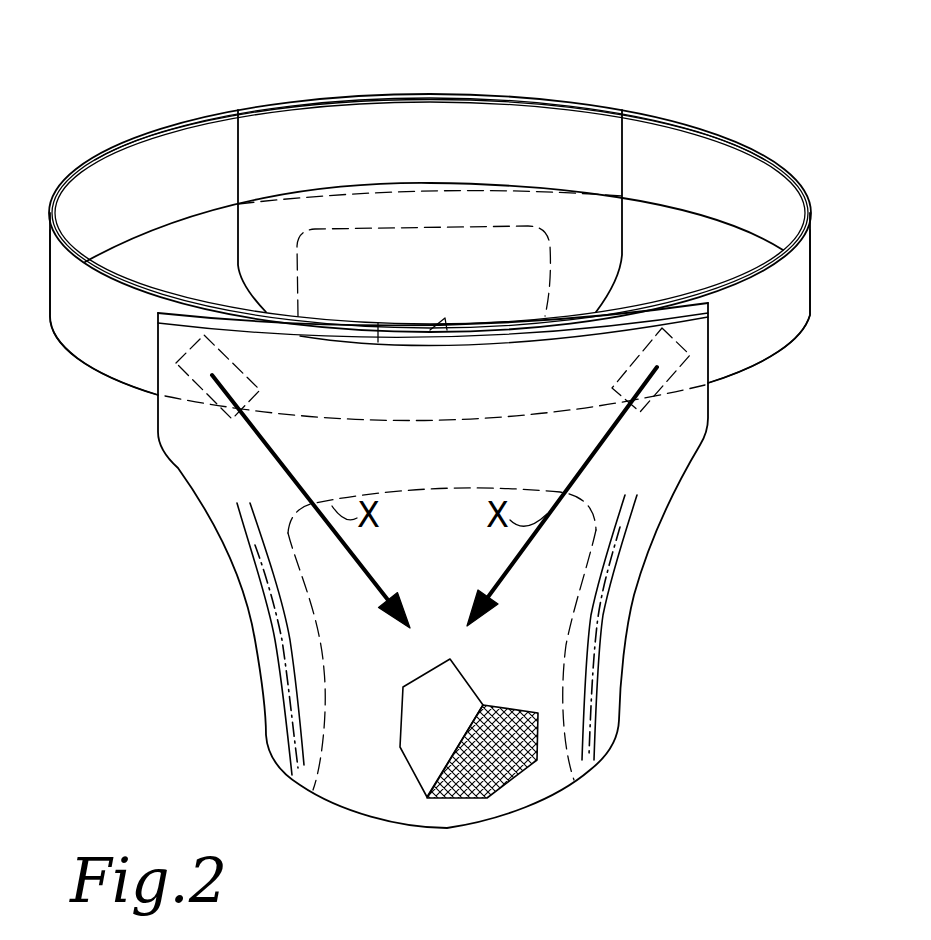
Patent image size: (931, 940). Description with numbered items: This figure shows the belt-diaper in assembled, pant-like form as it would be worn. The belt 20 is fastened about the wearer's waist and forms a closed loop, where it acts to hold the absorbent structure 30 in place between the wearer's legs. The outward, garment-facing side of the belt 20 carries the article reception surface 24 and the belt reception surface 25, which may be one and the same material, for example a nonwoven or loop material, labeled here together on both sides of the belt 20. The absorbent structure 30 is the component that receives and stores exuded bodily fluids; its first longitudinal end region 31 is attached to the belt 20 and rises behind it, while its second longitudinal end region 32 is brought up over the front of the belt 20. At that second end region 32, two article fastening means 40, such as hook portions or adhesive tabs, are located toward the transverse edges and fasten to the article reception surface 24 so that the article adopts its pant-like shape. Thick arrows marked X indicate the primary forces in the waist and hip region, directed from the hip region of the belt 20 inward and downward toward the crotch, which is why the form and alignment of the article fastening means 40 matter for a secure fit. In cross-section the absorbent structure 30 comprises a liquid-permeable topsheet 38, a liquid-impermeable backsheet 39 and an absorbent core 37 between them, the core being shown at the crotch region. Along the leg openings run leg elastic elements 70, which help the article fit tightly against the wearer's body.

The belt 20 is at (748, 134).
The article reception surface 24 is at (146, 357).
The belt reception surface 25 is at (733, 333).
The absorbent structure 30 is at (690, 572).
The first longitudinal end region 31 is at (418, 140).
The second longitudinal end region 32 is at (407, 378).
The absorbent core 37 is at (530, 758).
The liquid-permeable topsheet 38 is at (450, 291).
The liquid-impermeable backsheet 39 is at (455, 562).
The article fastening means 40 is at (197, 393).
The elastic elements 70 is at (293, 660).